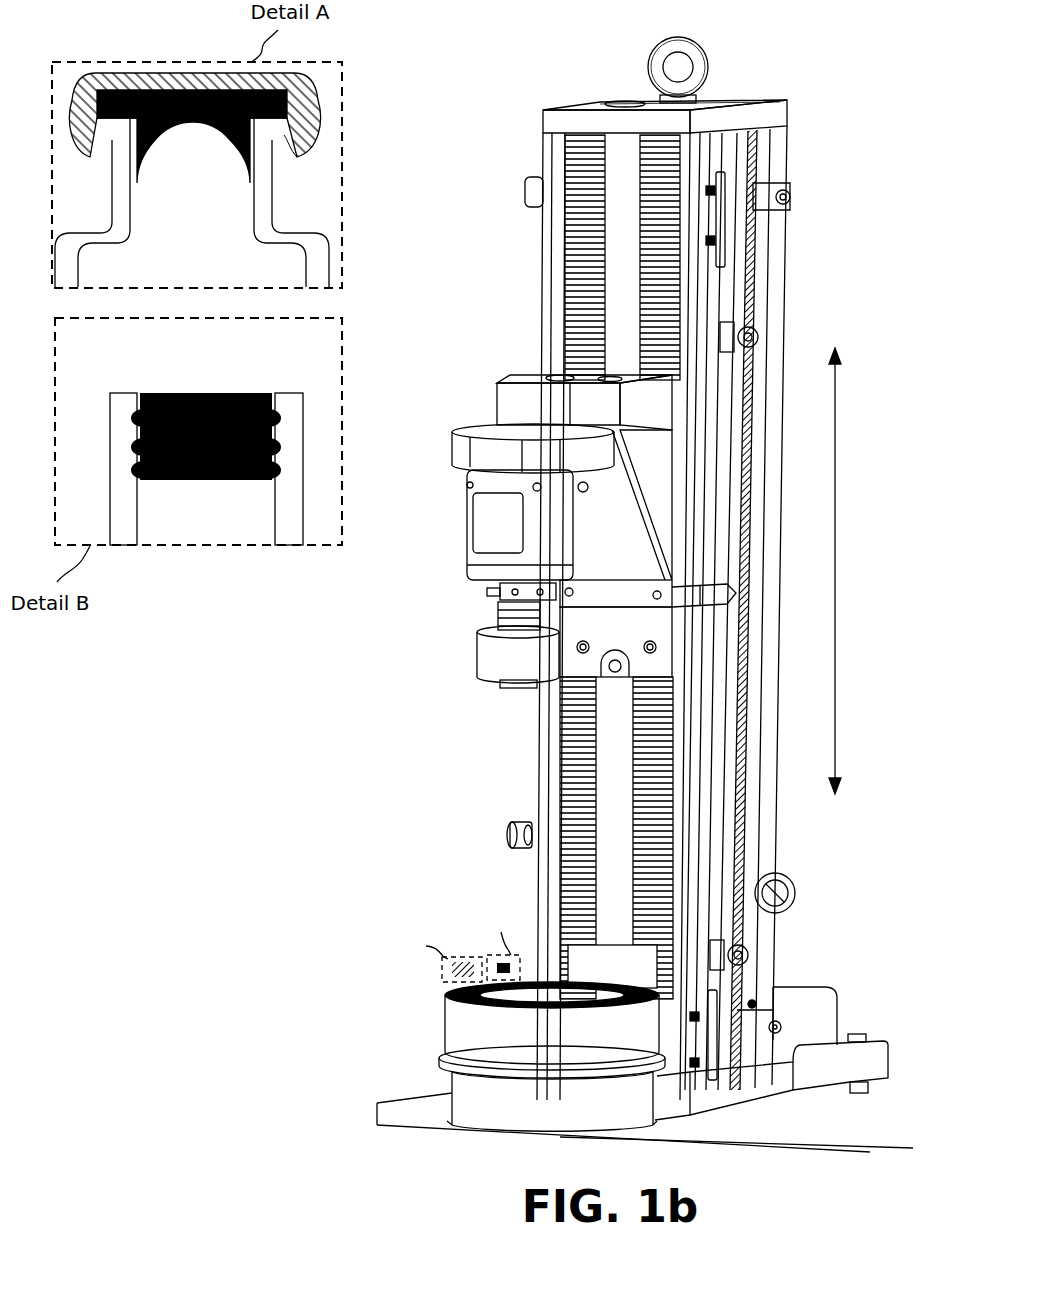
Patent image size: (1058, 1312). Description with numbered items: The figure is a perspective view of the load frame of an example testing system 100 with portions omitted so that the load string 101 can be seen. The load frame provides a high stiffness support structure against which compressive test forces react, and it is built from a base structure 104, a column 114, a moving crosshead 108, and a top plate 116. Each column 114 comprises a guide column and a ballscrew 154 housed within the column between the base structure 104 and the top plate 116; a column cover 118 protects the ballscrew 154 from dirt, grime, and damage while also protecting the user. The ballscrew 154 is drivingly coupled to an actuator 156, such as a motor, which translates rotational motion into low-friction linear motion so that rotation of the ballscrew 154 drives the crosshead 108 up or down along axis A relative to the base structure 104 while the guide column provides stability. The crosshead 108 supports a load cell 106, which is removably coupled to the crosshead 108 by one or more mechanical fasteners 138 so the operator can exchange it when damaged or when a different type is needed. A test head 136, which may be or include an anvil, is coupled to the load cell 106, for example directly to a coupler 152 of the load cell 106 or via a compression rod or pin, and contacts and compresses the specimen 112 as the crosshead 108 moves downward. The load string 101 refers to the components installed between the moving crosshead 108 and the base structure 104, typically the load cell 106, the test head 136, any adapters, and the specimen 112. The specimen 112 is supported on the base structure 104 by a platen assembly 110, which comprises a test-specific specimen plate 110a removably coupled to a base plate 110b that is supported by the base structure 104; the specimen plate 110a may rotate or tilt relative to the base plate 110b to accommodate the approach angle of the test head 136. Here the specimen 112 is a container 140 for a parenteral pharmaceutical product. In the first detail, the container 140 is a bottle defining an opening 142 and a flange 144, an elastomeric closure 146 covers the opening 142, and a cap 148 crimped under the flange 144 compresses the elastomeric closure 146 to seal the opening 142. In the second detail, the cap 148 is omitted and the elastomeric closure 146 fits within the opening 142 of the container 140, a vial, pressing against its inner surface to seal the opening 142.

The testing system 100 is at (862, 150).
The load string 101 is at (426, 377).
The base structure 104 is at (894, 1094).
The load cell 106 is at (466, 505).
The crosshead 108 is at (551, 451).
The platen assembly 110 is at (488, 1048).
The specimen plate 110a is at (446, 1026).
The base plate 110b is at (521, 1088).
The specimen 112 is at (443, 922).
The column 114 is at (545, 260).
The top plate 116 is at (752, 101).
The column cover 118 is at (566, 208).
The test head 136 is at (476, 650).
The mechanical fasteners 138 is at (556, 374).
The container 140 is at (112, 182).
The opening 142 is at (188, 197).
The flange 144 is at (273, 146).
The elastomeric closure 146 is at (210, 122).
The cap 148 is at (100, 153).
The coupler 152 is at (490, 595).
The ballscrew 154 is at (568, 693).
The actuator 156 is at (612, 966).